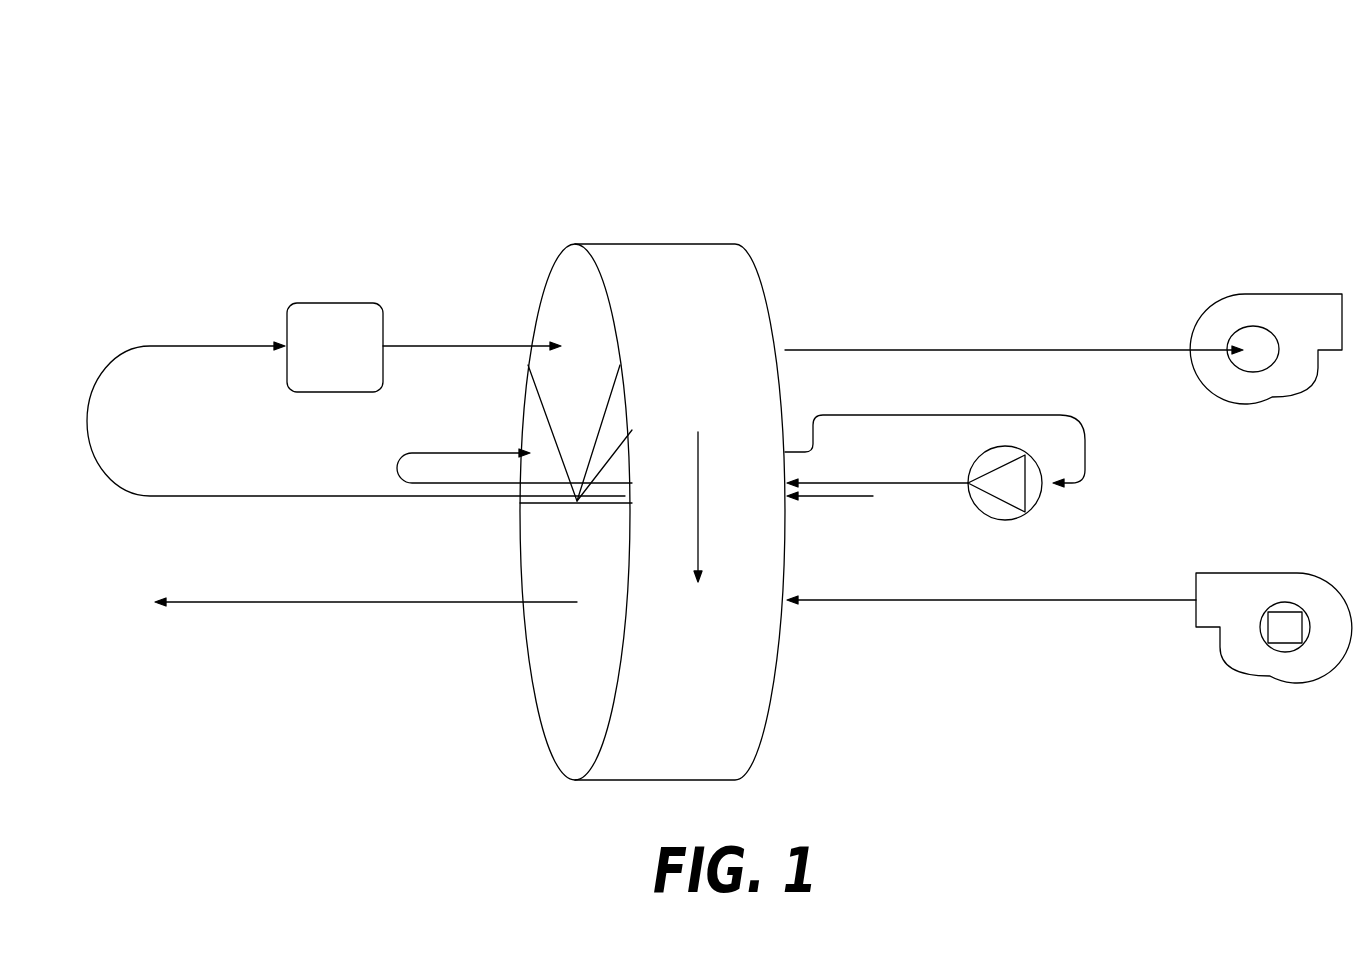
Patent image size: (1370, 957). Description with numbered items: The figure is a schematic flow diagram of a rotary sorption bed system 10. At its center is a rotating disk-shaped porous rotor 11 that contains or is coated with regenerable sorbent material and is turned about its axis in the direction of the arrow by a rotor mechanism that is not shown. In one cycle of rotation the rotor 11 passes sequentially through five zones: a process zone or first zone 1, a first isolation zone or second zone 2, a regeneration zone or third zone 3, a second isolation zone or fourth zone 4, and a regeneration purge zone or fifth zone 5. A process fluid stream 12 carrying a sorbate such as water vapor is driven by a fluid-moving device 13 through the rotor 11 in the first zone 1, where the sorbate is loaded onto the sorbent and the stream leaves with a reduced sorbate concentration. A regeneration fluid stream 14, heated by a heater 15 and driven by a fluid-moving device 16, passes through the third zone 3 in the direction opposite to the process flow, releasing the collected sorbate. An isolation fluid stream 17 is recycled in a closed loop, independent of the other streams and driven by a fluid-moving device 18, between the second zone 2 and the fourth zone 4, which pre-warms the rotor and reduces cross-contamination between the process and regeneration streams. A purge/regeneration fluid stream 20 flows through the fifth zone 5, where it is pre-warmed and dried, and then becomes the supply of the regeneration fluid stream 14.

The rotary sorption bed system 10 is at (399, 88).
The first zone 1 is at (638, 479).
The rotor 11 is at (662, 266).
The second zone 2 is at (533, 435).
The third zone 3 is at (562, 288).
The fourth zone 4 is at (620, 428).
The fifth zone 5 is at (600, 500).
The process fluid stream 12 is at (958, 600).
The fluid-moving device 13 is at (1295, 683).
The regeneration fluid stream 14 is at (184, 346).
The heater 15 is at (332, 303).
The fluid-moving device 16 is at (1240, 294).
The isolation fluid stream 17 is at (895, 483).
The fluid-moving device 18 is at (1030, 512).
The purge/regeneration fluid stream 20 is at (836, 496).